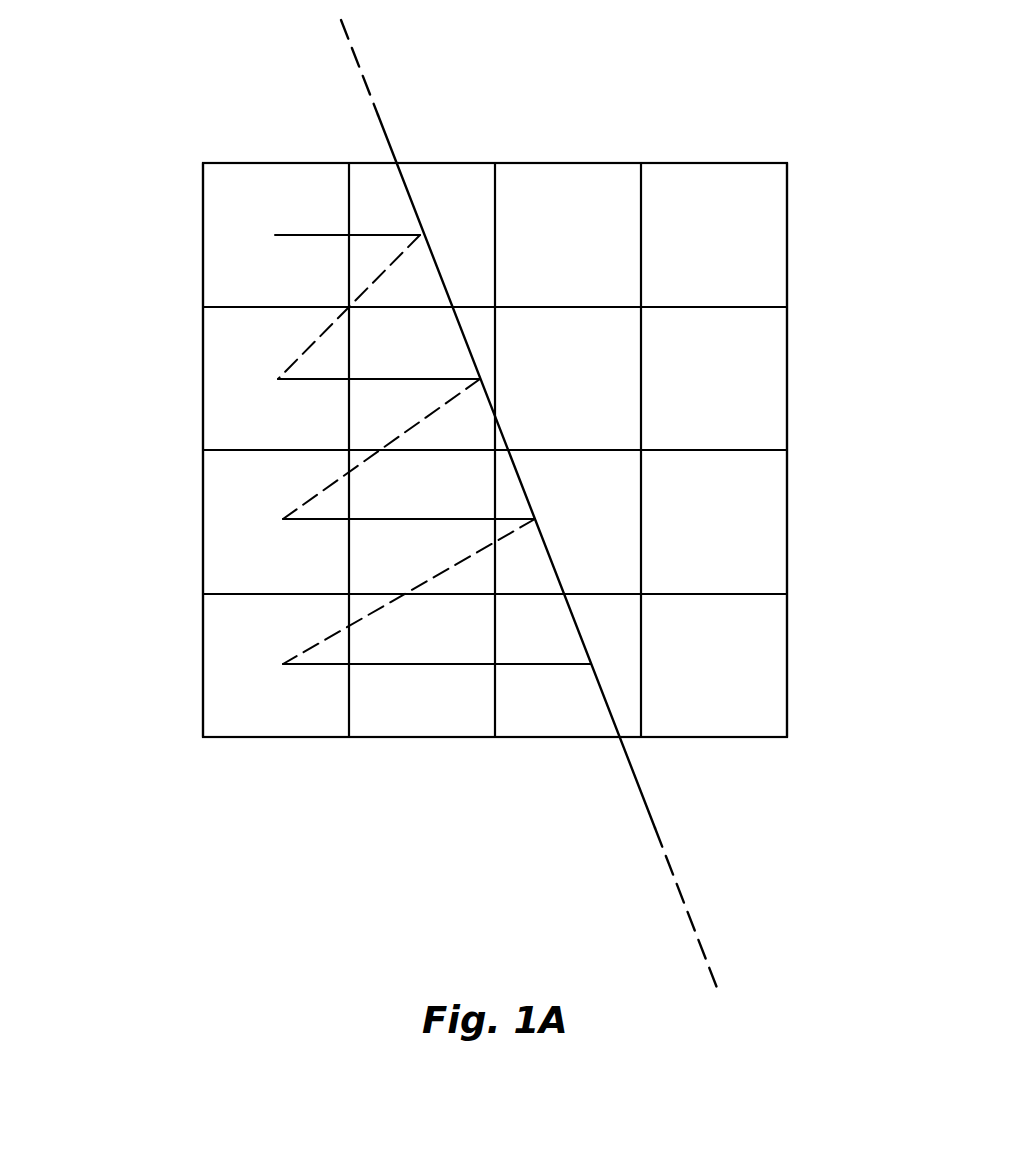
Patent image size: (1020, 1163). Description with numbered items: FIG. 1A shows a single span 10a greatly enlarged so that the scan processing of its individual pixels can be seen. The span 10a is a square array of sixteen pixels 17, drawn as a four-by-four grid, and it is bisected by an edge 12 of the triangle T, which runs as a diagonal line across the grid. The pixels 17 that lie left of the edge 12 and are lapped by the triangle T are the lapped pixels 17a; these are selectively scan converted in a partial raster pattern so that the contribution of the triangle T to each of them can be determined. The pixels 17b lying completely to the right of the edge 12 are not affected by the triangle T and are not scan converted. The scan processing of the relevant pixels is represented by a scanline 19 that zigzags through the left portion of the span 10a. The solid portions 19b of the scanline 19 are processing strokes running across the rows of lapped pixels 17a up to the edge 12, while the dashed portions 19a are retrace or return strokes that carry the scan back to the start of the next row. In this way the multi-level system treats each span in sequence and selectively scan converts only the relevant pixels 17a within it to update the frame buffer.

The pixels 17 is at (548, 737).
The lapped pixels 17a is at (203, 215).
The pixels completely to the right of the edge 17b is at (787, 225).
The span 10a is at (787, 537).
The edge 12 is at (605, 694).
The triangle T is at (655, 828).
The scanline 19 is at (349, 365).
The dashed portions 19a is at (397, 265).
The solid portions 19b is at (323, 238).